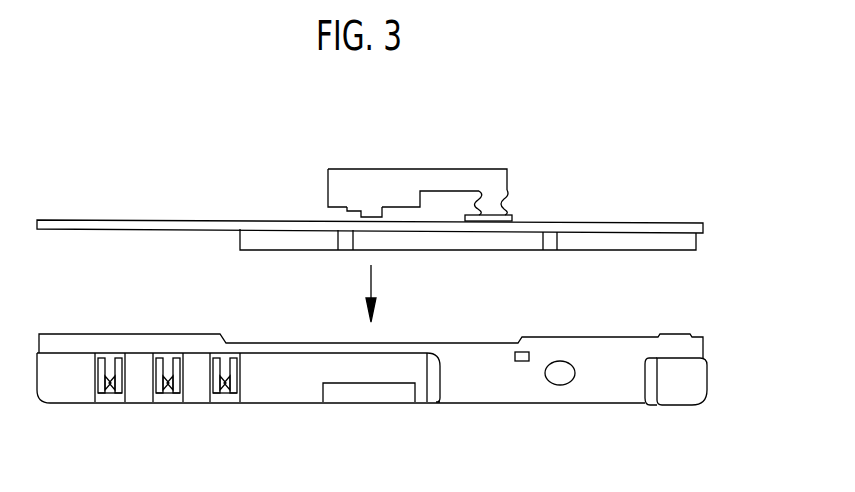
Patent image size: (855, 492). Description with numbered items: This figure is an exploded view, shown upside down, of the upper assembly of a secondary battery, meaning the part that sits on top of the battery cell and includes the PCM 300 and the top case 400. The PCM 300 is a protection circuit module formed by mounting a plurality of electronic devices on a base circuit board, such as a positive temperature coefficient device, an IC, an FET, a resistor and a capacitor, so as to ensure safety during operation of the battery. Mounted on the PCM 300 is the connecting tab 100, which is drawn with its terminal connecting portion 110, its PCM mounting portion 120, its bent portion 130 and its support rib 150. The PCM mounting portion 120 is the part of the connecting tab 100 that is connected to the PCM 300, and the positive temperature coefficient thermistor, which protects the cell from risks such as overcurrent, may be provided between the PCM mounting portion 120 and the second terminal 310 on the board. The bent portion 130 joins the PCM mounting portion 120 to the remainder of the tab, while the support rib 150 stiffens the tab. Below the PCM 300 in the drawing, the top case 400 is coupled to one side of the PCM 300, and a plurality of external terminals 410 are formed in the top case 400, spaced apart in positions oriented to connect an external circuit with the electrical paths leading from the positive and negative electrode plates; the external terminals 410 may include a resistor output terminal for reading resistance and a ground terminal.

The connecting tab 100 is at (458, 155).
The terminal connecting portion 110 is at (382, 183).
The PCM mounting portion 120 is at (474, 200).
The bent portion 130 is at (505, 203).
The support rib 150 is at (347, 208).
The PCM 300 is at (698, 220).
The second terminal 310 is at (508, 218).
The top case 400 is at (413, 410).
The external terminals 410 is at (223, 396).